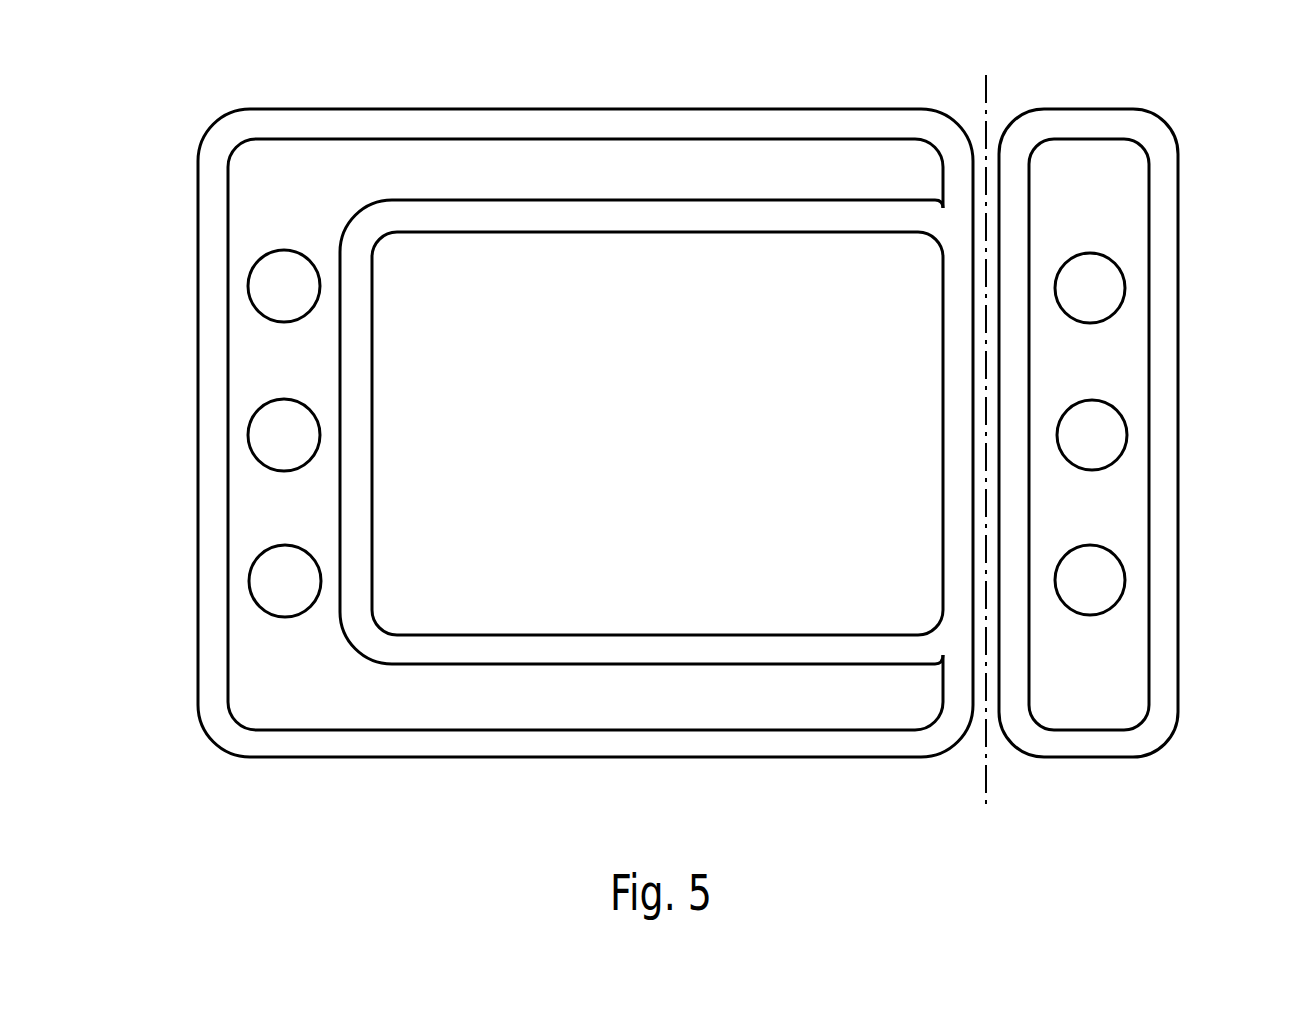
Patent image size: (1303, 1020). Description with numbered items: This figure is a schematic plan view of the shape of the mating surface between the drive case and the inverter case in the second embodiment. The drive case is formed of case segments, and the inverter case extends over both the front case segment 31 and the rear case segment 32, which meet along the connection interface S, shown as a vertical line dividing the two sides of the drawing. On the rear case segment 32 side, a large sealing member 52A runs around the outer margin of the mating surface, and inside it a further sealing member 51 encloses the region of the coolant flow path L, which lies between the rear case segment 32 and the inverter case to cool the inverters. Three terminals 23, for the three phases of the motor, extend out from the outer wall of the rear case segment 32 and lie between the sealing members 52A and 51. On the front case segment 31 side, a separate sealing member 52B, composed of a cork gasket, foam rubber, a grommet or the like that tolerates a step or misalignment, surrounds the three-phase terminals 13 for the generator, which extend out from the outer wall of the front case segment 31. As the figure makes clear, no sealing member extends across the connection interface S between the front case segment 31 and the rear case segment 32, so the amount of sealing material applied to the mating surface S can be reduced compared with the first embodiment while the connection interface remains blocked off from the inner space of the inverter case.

The sealing member 52A is at (679, 132).
The sealing member 52B is at (1085, 132).
The sealing member 51 is at (363, 373).
The terminal 23 is at (288, 407).
The terminal 13 is at (1102, 428).
The flow path L is at (667, 445).
The connection interface S is at (987, 100).
The front case segment 31 is at (988, 784).
The rear case segment 32 is at (985, 784).